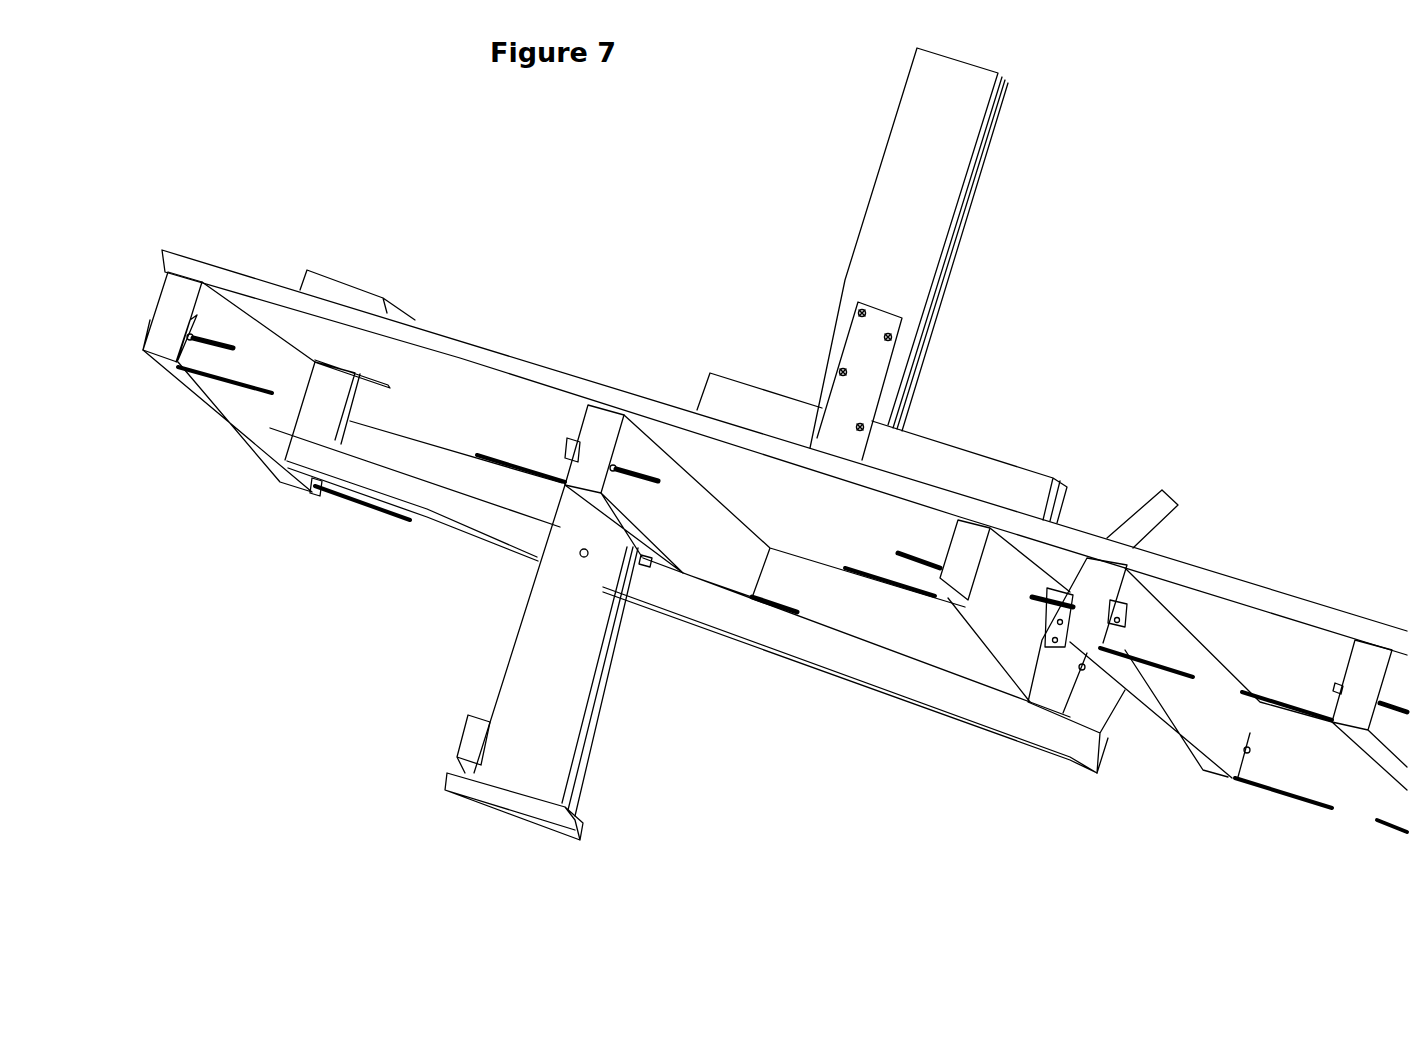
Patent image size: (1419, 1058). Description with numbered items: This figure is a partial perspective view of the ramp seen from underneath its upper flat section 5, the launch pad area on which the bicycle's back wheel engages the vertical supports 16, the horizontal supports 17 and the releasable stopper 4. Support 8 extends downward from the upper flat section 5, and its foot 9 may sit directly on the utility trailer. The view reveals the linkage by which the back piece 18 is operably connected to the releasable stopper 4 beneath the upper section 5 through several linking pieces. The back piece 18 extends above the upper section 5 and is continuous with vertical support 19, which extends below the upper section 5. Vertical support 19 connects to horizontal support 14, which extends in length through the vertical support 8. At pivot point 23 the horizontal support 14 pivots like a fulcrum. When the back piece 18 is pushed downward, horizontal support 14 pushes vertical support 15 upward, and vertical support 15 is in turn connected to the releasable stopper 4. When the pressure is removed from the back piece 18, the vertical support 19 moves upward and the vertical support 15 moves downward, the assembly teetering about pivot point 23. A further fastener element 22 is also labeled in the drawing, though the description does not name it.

The releasable stopper 4 is at (1159, 495).
The upper flat section 5 is at (549, 375).
The support 8 is at (567, 687).
The foot 9 is at (520, 806).
The horizontal support 14 is at (452, 507).
The vertical support 15 is at (1053, 680).
The vertical supports 16 is at (938, 191).
The horizontal supports 17 is at (972, 461).
The back piece 18 is at (345, 291).
The vertical support 19 is at (323, 415).
The fastener bracket 22 is at (1088, 690).
The pivot point 23 is at (590, 558).